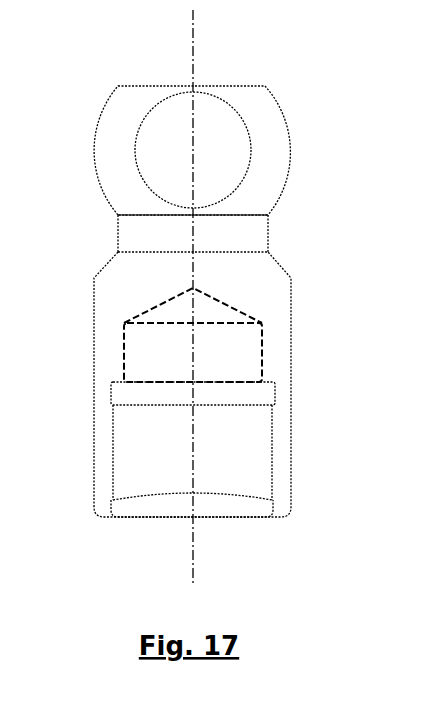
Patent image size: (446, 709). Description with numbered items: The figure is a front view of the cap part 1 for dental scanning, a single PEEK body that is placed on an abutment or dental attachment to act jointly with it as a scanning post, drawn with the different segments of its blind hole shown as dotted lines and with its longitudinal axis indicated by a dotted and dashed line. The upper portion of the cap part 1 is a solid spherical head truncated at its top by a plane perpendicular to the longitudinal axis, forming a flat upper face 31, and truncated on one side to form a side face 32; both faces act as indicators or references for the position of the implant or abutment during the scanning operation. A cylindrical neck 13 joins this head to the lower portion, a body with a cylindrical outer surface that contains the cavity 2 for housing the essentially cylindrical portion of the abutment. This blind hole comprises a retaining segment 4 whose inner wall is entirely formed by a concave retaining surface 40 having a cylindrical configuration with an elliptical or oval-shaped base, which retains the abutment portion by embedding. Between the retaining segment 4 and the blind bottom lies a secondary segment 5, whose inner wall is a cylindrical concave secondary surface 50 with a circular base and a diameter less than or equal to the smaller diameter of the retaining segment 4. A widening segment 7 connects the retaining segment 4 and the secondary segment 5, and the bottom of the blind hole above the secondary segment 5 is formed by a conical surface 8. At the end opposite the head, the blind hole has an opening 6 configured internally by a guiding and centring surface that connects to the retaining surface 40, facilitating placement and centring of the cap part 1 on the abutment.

The cap part 1 is at (340, 65).
The cavity 2 is at (201, 462).
The retaining segment 4 is at (226, 452).
The secondary segment 5 is at (234, 335).
The opening 6 is at (223, 510).
The widening segment 7 is at (257, 398).
The conical surface 8 is at (213, 384).
The cylindrical neck 13 is at (150, 240).
The flat upper face 31 is at (150, 86).
The side face 32 is at (215, 146).
The retaining surface 40 is at (192, 452).
The secondary surface 50 is at (193, 352).